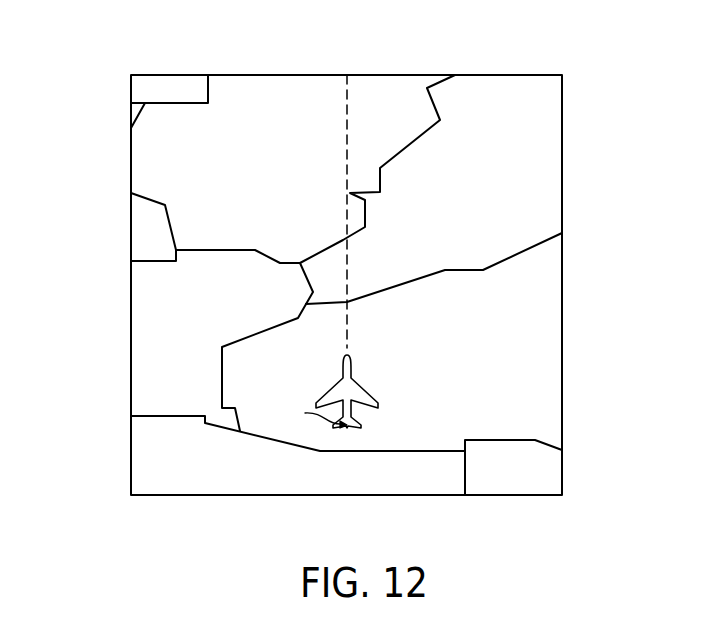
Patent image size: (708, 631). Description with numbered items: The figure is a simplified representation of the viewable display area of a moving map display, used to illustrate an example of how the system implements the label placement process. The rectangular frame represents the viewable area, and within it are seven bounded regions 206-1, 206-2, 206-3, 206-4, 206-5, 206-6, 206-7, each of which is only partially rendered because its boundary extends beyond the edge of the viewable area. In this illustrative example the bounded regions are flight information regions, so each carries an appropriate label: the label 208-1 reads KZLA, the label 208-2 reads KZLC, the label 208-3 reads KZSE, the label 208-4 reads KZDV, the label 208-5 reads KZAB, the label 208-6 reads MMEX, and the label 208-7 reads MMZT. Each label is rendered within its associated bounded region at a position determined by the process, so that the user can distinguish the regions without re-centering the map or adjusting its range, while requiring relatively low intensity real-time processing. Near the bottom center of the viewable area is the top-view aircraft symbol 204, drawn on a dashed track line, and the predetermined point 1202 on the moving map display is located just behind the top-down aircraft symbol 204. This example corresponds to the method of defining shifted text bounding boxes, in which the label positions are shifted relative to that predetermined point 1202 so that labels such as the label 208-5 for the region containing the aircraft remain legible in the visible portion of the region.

The top-view aircraft symbol 204 is at (357, 378).
The predetermined point 1202 is at (294, 413).
The bounded region 206-1 is at (215, 343).
The bounded region 206-2 is at (320, 125).
The bounded region 206-3 is at (140, 92).
The bounded region 206-4 is at (528, 165).
The bounded region 206-5 is at (537, 327).
The bounded region 206-6 is at (550, 475).
The bounded region 206-7 is at (233, 473).
The label 208-1 is at (247, 298).
The label 208-2 is at (288, 222).
The label 208-3 is at (160, 82).
The label 208-4 is at (366, 273).
The label 208-5 is at (372, 434).
The label 208-6 is at (523, 460).
The label 208-7 is at (345, 483).